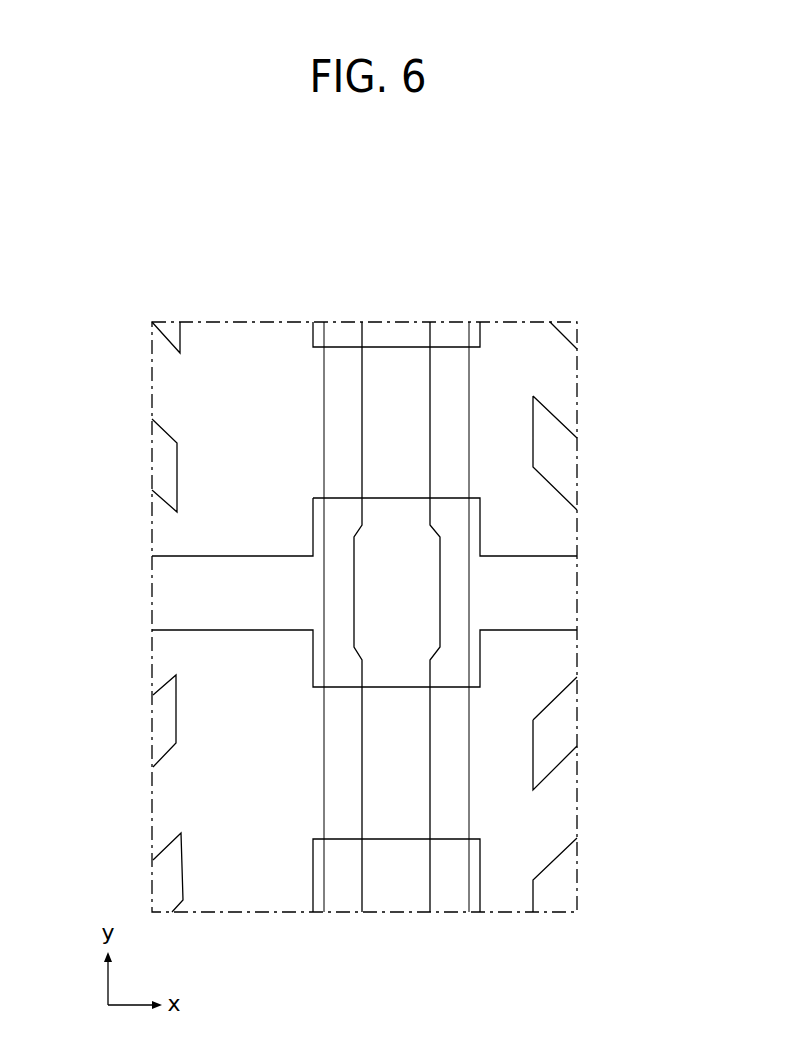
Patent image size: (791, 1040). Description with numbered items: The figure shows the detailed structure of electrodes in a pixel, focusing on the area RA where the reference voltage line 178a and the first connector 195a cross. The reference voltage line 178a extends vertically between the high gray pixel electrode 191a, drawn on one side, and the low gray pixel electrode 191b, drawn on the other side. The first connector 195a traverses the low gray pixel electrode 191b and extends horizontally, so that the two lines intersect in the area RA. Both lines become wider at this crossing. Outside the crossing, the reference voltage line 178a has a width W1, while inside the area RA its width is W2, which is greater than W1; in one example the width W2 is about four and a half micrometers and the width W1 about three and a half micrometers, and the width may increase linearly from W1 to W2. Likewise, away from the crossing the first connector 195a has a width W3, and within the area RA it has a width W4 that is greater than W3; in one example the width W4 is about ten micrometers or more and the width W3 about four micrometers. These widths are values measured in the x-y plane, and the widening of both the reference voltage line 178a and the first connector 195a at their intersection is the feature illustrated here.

The area RA is at (373, 308).
The first connector 195a is at (445, 497).
The high gray pixel electrode 191a is at (533, 743).
The low gray pixel electrode 191b is at (176, 718).
The reference voltage line 178a is at (430, 805).
The width W1 is at (370, 725).
The width W2 is at (362, 609).
The width W3 is at (256, 564).
The width W4 is at (336, 676).